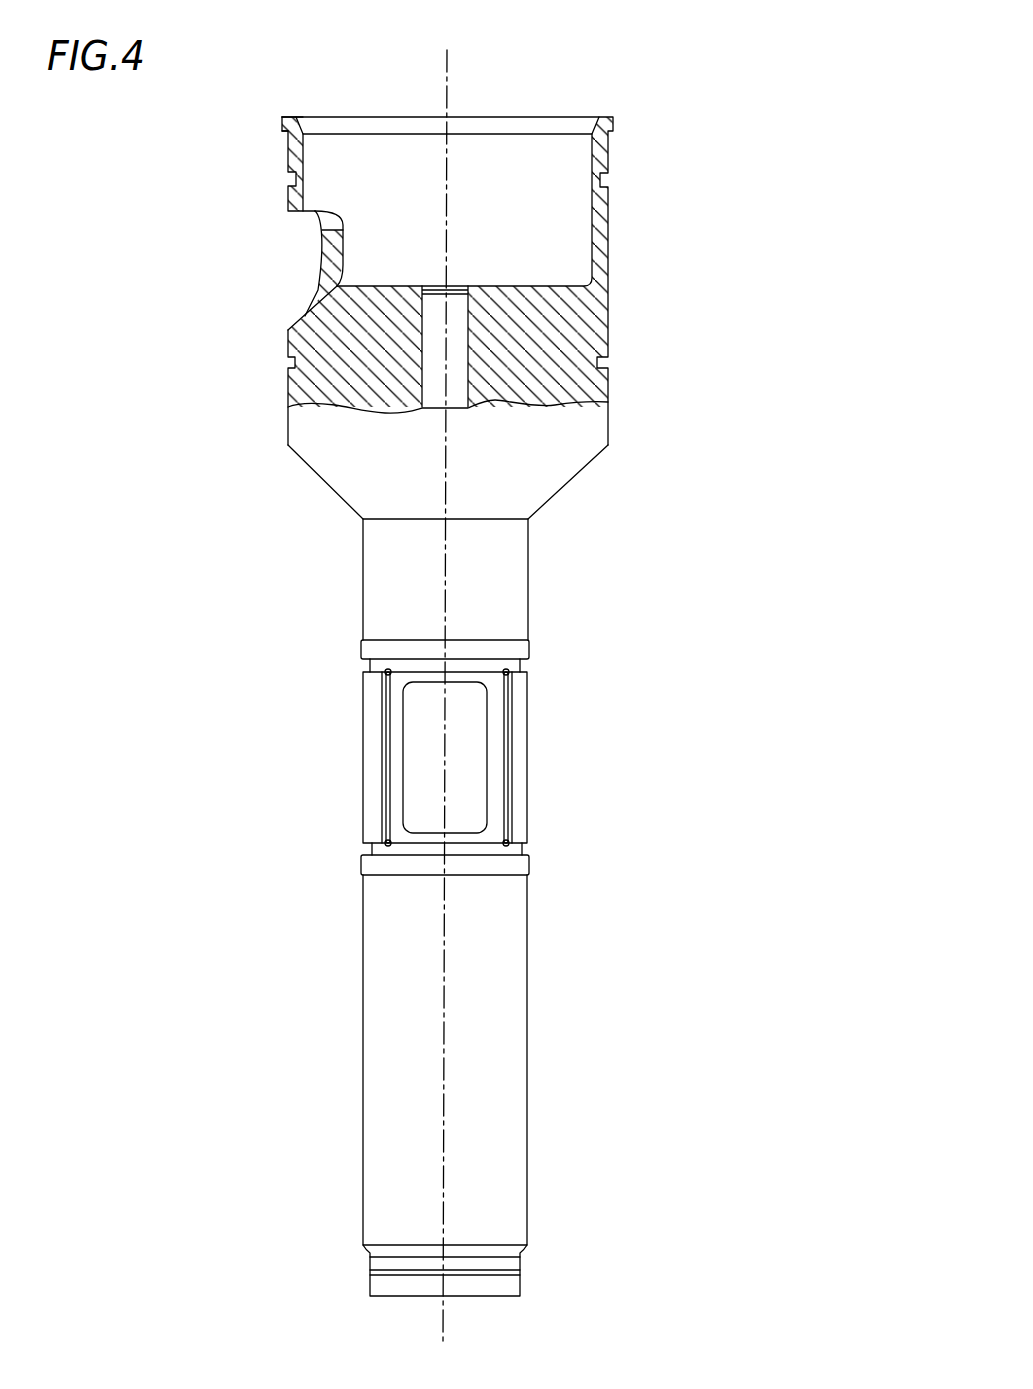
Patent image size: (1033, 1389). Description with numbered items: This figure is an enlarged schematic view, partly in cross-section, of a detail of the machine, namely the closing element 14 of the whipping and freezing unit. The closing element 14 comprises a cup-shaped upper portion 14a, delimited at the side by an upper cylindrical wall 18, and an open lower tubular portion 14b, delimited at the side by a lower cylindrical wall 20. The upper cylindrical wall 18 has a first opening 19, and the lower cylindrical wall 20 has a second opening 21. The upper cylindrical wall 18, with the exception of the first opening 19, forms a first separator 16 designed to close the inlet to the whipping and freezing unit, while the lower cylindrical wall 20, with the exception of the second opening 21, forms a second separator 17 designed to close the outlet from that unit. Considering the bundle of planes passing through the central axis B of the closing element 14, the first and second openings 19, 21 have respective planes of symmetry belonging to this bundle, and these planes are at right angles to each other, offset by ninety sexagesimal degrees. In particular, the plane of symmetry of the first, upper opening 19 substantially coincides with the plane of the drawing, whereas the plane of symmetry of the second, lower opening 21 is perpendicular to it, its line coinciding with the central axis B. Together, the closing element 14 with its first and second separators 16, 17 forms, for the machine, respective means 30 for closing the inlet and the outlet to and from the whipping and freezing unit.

The central axis B is at (448, 80).
The closing element 14 is at (461, 702).
The cup-shaped upper portion 14a is at (617, 213).
The open lower tubular portion 14b is at (558, 973).
The first separator 16 is at (608, 310).
The second separator 17 is at (530, 782).
The upper cylindrical wall 18 is at (288, 153).
The first opening 19 is at (298, 258).
The lower cylindrical wall 20 is at (360, 816).
The second opening 21 is at (463, 783).
The means for closing the inlet and the outlet 30 is at (220, 427).